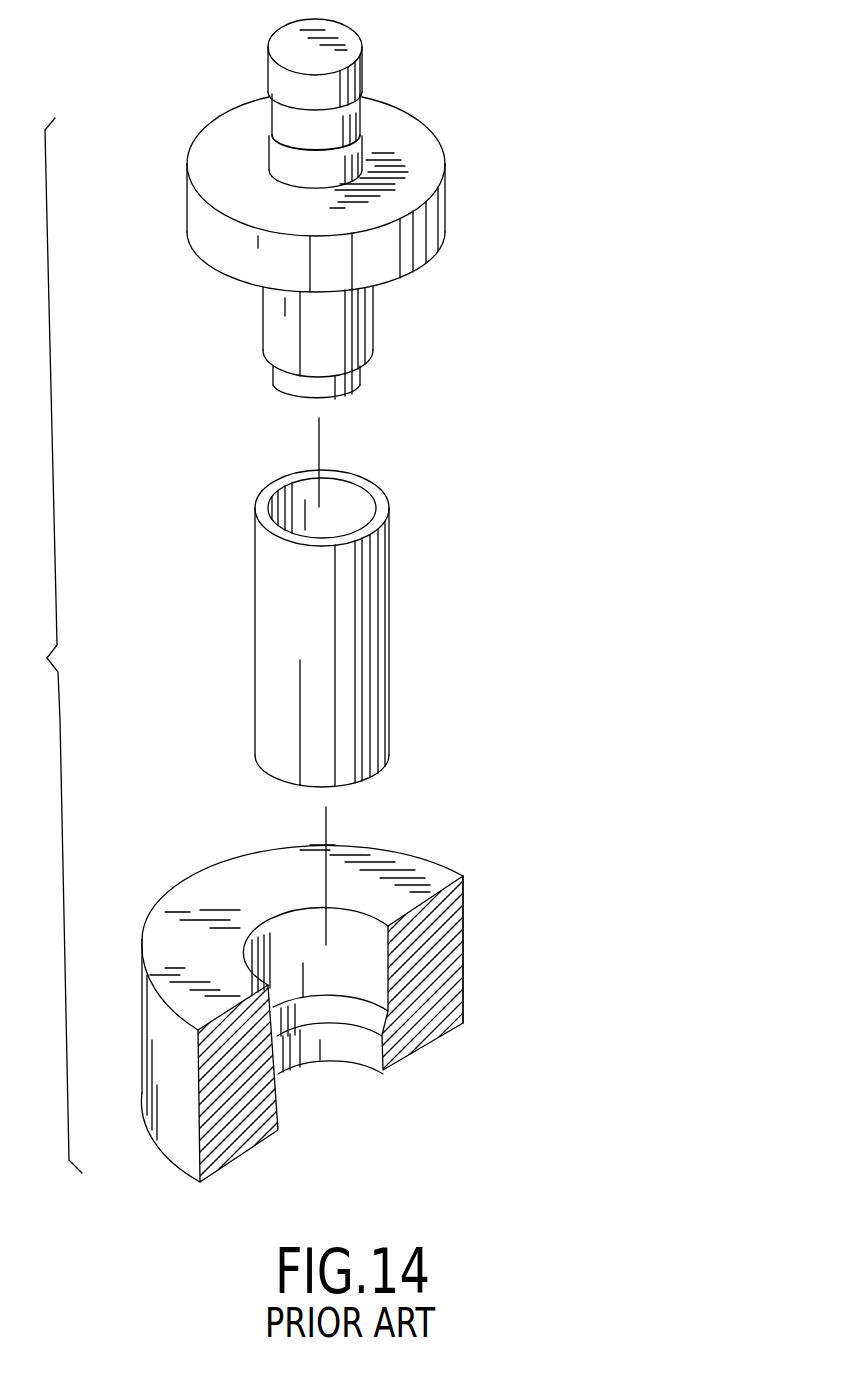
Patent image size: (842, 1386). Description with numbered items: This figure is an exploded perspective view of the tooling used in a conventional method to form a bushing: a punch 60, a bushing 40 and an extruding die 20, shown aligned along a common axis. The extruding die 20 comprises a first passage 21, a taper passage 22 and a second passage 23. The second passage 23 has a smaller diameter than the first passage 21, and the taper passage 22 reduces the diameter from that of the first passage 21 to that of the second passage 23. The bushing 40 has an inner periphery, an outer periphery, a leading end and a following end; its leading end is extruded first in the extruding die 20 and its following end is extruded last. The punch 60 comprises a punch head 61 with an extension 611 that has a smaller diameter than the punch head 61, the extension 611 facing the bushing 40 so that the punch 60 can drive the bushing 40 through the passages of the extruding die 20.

The extruding die 20 is at (329, 982).
The first passage 21 is at (300, 926).
The taper passage 22 is at (364, 1012).
The second passage 23 is at (380, 1013).
The bushing 40 is at (263, 590).
The punch 60 is at (297, 217).
The punch head 61 is at (272, 318).
The extension 611 is at (272, 372).